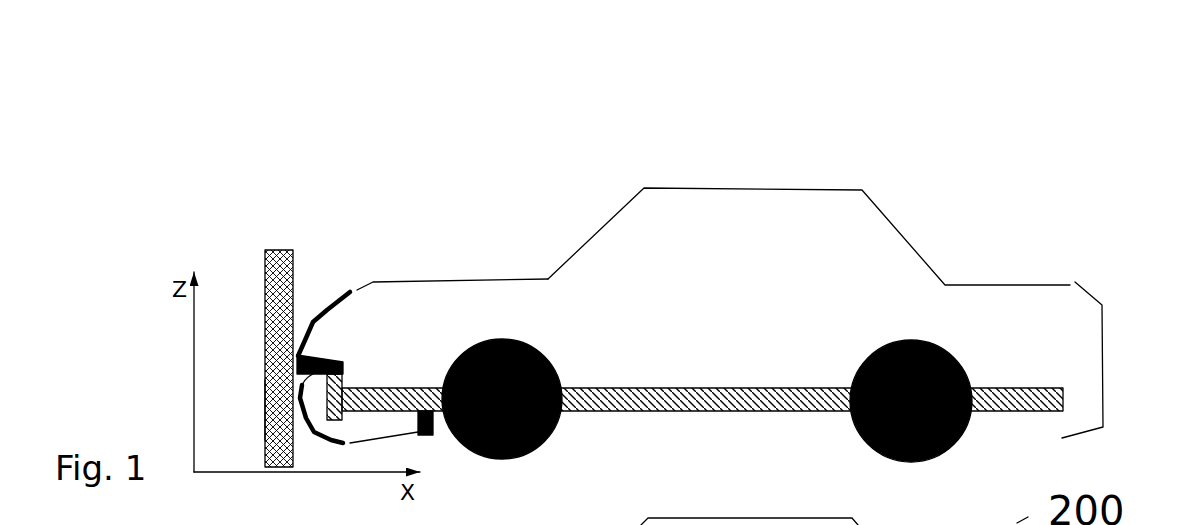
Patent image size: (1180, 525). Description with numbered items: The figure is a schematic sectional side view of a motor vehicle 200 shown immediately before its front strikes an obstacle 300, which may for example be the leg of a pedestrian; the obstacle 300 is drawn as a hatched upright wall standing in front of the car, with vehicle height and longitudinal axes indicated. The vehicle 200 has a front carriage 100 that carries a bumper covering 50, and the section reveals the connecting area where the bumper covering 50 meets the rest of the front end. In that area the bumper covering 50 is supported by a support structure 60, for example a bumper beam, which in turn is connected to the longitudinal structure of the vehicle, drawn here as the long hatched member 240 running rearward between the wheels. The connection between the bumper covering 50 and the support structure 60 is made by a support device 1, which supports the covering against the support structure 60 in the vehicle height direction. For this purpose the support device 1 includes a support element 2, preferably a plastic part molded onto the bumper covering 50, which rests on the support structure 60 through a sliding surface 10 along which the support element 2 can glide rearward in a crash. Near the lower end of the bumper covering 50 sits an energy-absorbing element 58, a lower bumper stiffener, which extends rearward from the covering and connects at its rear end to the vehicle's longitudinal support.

The support device 1 is at (363, 361).
The support element 2 is at (330, 359).
The sliding surface 10 is at (265, 408).
The bumper covering 50 is at (323, 307).
The element which absorbs impact energy 58 is at (395, 437).
The support structure 60 is at (331, 421).
The front carriage 100 is at (368, 268).
The motor vehicle 200 is at (920, 200).
The longitudinal member 240 is at (372, 400).
The obstacle 300 is at (265, 267).